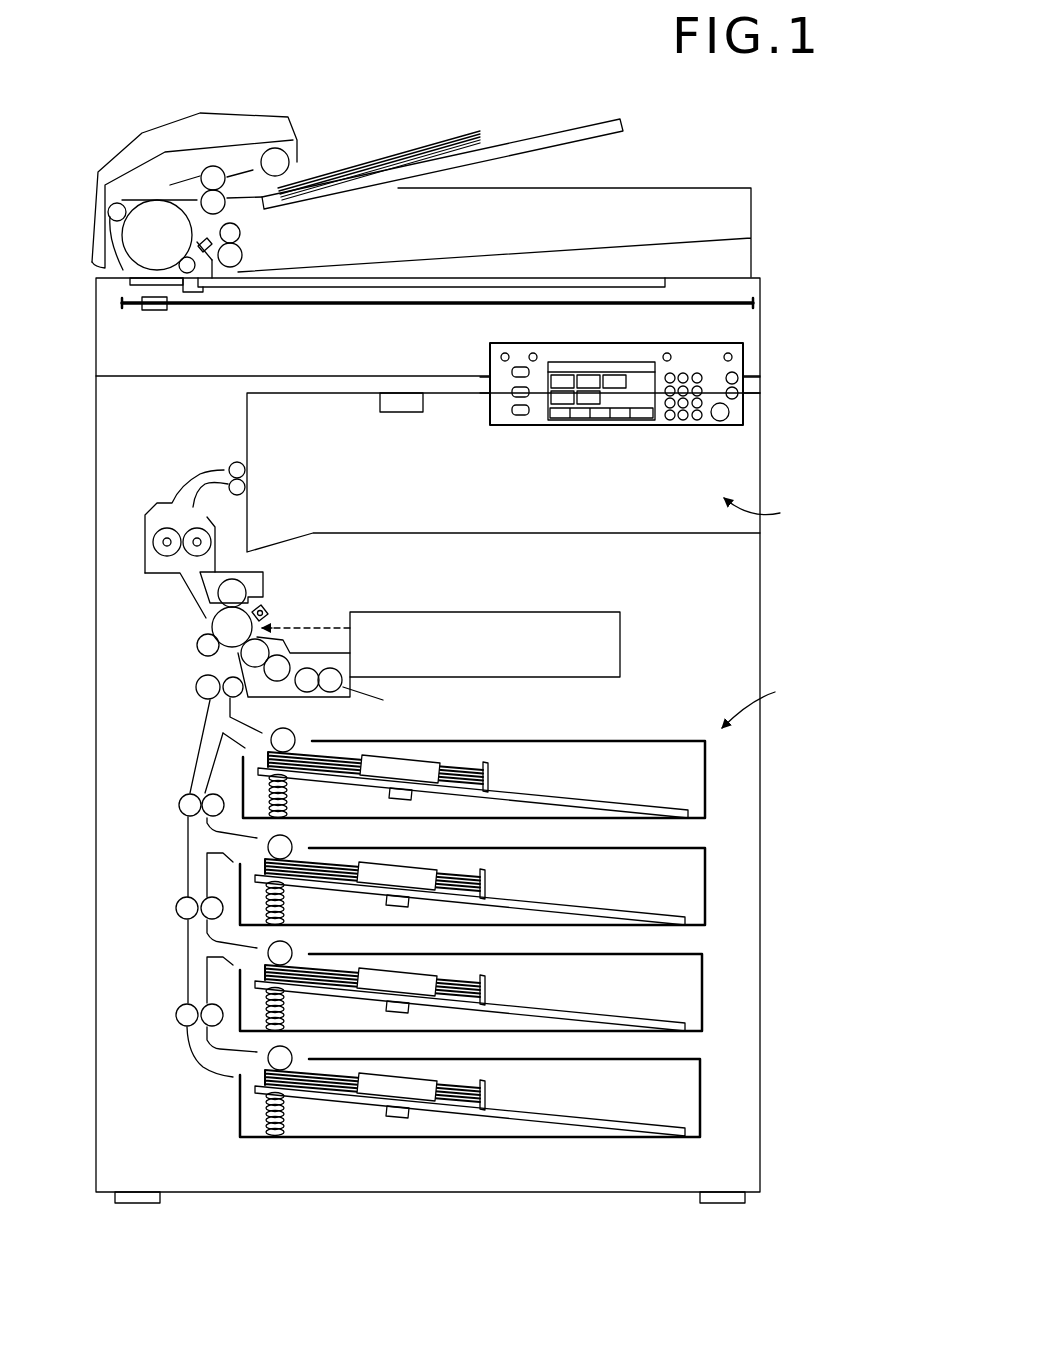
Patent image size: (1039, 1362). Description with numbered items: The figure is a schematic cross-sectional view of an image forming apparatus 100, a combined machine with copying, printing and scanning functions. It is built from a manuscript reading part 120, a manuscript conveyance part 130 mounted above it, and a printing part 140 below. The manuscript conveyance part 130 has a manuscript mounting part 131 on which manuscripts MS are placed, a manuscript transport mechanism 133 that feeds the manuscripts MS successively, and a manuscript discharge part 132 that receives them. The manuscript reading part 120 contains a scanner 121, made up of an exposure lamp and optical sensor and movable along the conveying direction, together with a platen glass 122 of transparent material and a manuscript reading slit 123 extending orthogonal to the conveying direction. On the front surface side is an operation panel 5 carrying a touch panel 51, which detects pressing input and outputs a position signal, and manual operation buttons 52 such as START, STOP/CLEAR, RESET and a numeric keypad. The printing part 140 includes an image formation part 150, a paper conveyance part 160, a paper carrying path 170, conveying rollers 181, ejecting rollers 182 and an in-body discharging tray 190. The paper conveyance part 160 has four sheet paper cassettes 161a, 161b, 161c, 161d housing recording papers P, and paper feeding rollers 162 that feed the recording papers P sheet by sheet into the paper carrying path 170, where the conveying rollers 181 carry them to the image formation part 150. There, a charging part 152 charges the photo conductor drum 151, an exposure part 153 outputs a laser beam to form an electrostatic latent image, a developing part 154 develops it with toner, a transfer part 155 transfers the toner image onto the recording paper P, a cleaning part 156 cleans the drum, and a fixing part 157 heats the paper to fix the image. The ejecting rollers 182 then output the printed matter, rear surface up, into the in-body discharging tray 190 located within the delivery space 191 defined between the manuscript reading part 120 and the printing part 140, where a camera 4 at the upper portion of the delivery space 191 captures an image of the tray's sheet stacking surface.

The image forming apparatus 100 is at (82, 31).
The manuscript reading part 120 is at (768, 311).
The scanner 121 is at (156, 311).
The platen glass 122 is at (590, 284).
The manuscript reading slit 123 is at (165, 284).
The manuscript conveyance part 130 is at (307, 125).
The manuscript mounting part 131 is at (592, 117).
The manuscript discharge part 132 is at (510, 252).
The manuscript transport mechanism 133 is at (230, 107).
The manuscript MS is at (438, 138).
The printing part 140 is at (768, 578).
The camera 4 is at (400, 413).
The operation panel 5 is at (747, 401).
The touch panel 51 is at (643, 420).
The manual operation buttons 52 is at (702, 427).
The image formation part 150 is at (347, 592).
The photo conductor drum 151 is at (214, 623).
The charging part 152 is at (270, 608).
The exposure part 153 is at (578, 657).
The developing part 154 is at (383, 700).
The transfer part 155 is at (198, 645).
The cleaning part 156 is at (258, 582).
The fixing part 157 is at (217, 533).
The paper conveyance part 160 is at (766, 702).
The sheet paper cassette 161a is at (705, 781).
The sheet paper cassette 161b is at (705, 888).
The sheet paper cassette 161c is at (702, 994).
The sheet paper cassette 161d is at (700, 1100).
The paper feeding roller 162 is at (292, 739).
The recording paper P is at (456, 765).
The paper carrying path 170 is at (186, 747).
The conveying rollers 181 is at (196, 688).
The ejecting rollers 182 is at (242, 464).
The in-body discharging tray 190 is at (467, 528).
The delivery space 191 is at (772, 506).